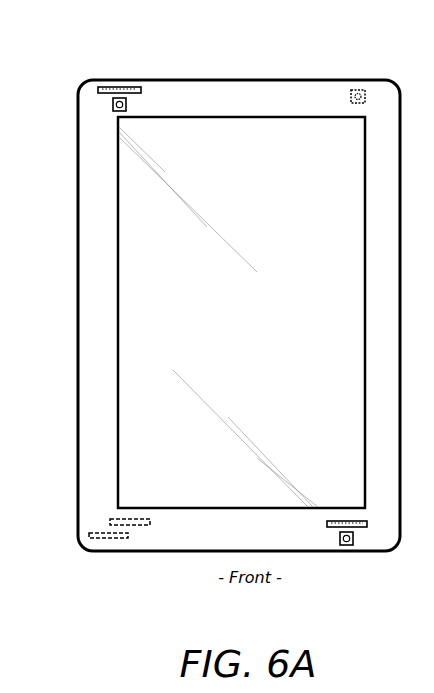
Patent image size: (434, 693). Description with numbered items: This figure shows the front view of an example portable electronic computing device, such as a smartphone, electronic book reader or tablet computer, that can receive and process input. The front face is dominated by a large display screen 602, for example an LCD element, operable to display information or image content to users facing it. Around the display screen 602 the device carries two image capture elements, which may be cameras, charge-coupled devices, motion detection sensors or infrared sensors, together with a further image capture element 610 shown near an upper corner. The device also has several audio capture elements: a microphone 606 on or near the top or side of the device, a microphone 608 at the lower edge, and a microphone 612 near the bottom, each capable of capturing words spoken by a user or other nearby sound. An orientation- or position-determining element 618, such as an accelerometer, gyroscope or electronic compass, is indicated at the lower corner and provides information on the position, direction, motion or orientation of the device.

The display screen 602 is at (118, 228).
The microphone 606 is at (128, 87).
The microphone 608 is at (358, 527).
The image capture element 610 is at (356, 90).
The microphone 612 is at (132, 525).
The orientation- or position-determining element 618 is at (105, 539).